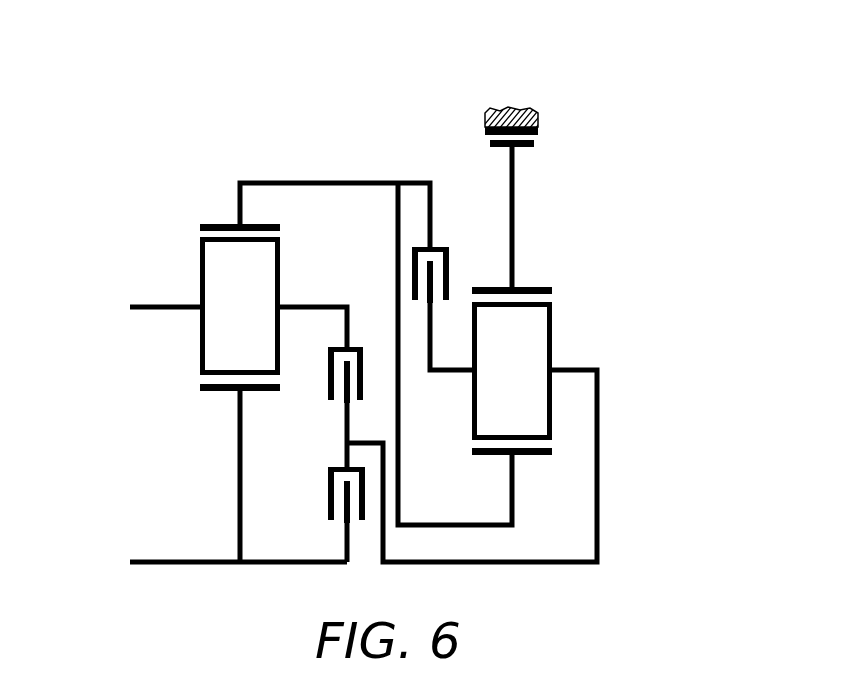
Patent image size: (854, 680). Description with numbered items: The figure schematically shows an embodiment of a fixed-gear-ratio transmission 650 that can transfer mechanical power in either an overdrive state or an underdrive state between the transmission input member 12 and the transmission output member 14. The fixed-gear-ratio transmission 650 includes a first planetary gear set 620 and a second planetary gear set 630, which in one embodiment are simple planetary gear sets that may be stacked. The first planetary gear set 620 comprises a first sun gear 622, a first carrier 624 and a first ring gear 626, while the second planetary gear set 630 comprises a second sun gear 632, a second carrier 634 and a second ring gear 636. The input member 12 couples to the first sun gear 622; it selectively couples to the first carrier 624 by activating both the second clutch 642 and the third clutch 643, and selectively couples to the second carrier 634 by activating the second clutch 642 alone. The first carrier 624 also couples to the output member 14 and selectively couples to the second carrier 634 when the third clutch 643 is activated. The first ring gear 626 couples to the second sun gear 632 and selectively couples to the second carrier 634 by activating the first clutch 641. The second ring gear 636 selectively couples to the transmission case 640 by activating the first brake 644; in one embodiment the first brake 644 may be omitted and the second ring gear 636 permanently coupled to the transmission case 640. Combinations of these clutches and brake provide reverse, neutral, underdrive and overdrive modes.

The transmission input member 12 is at (222, 559).
The transmission output member 14 is at (149, 304).
The first planetary gear set 620 is at (259, 214).
The first sun gear 622 is at (258, 393).
The first carrier 624 is at (275, 306).
The first ring gear 626 is at (215, 223).
The second planetary gear set 630 is at (532, 275).
The second sun gear 632 is at (527, 458).
The second carrier 634 is at (512, 371).
The second ring gear 636 is at (495, 285).
The transmission case 640 is at (510, 108).
The first clutch 641 is at (410, 283).
The second clutch 642 is at (325, 500).
The third clutch 643 is at (366, 380).
The first brake 644 is at (525, 138).
The fixed-gear-ratio transmission 650 is at (633, 80).